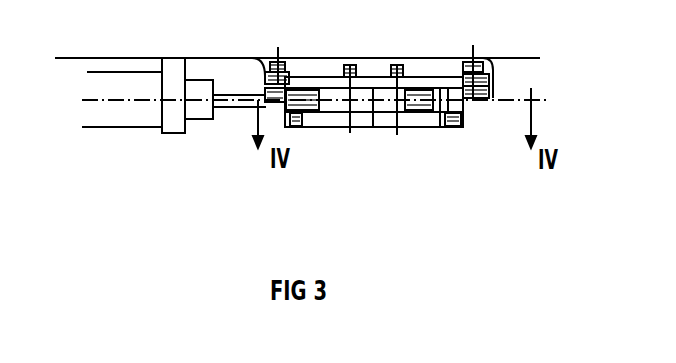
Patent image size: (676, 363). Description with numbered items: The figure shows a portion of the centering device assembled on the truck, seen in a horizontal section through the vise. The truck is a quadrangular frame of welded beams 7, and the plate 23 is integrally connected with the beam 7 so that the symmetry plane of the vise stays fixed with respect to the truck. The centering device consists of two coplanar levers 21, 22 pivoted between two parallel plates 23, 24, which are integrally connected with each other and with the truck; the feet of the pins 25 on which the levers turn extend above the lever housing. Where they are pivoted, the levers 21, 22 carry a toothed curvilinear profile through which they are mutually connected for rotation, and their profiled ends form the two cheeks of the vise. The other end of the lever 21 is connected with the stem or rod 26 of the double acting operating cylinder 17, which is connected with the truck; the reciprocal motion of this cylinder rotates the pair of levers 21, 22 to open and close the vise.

The operating cylinder 17 is at (122, 117).
The beam 7 is at (195, 45).
The shaft 26 is at (235, 101).
The lever 21 is at (330, 100).
The pins 25 is at (373, 165).
The lever 22 is at (418, 99).
The plate 24 is at (459, 187).
The plate 23 is at (486, 168).